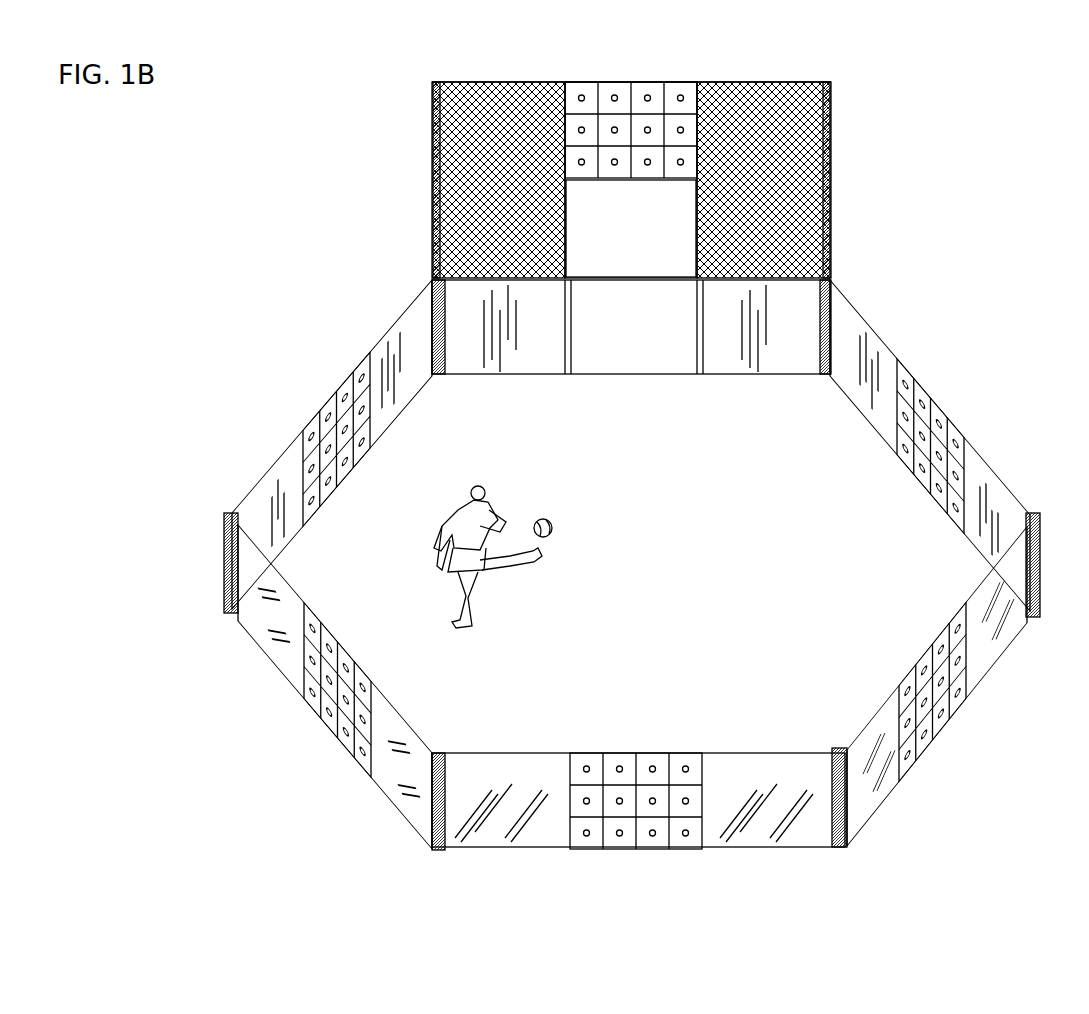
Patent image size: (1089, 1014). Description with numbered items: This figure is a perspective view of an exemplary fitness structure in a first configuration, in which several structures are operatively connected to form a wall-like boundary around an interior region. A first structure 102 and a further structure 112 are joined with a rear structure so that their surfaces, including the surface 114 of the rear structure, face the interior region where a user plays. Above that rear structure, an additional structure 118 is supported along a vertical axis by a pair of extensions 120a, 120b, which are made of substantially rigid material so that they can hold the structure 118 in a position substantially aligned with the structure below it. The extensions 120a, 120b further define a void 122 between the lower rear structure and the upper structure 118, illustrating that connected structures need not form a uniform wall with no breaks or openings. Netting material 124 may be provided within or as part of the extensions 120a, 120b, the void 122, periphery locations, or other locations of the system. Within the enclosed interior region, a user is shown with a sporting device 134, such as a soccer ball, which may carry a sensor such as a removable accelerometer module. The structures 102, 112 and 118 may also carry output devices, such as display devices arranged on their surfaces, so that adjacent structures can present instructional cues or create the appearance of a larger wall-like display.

The structure 102 is at (613, 452).
The structure 112 is at (912, 445).
The surface 114 is at (652, 332).
The structure 118 is at (631, 144).
The extension 120a is at (499, 180).
The extension 120b is at (812, 190).
The void 122 is at (652, 252).
The netting material 124 is at (645, 153).
The sporting device 134 is at (552, 518).